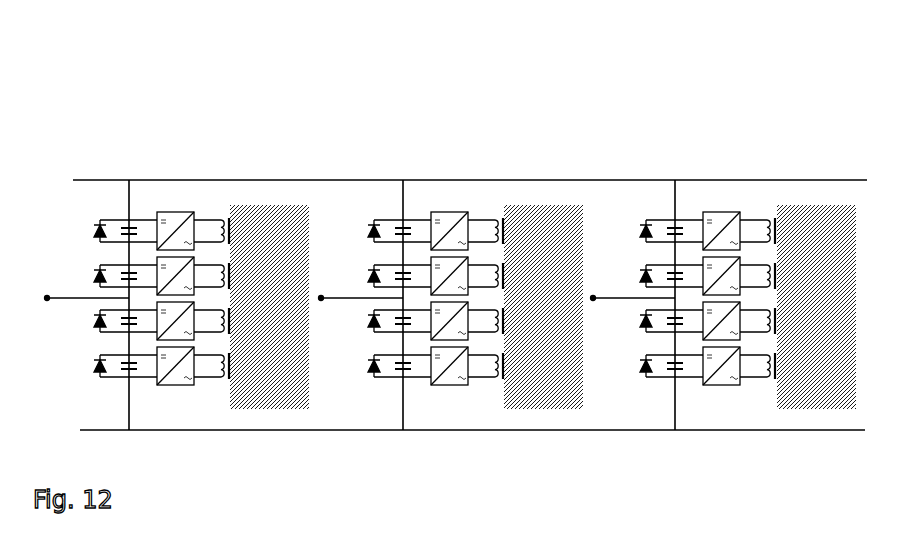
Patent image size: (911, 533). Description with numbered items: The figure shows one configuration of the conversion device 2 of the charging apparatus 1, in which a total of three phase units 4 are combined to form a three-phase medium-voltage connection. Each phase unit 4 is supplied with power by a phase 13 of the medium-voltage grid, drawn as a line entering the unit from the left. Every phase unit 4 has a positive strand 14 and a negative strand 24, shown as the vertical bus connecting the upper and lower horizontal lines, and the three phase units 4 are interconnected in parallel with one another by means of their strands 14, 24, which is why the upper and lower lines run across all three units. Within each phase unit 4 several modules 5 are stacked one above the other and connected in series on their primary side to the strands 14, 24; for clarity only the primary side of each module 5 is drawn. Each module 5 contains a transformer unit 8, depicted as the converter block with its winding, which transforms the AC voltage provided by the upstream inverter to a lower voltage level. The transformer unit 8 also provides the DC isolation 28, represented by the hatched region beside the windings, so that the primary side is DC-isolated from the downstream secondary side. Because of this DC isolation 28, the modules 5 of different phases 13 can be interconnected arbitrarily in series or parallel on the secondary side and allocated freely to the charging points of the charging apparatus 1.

The charging apparatus 1 is at (86, 47).
The conversion device 2 is at (790, 129).
The phase unit 4 is at (128, 166).
The module 5 is at (78, 222).
The transformer unit 8 is at (215, 203).
The phase 13 is at (83, 297).
The positive strand 14 is at (135, 185).
The negative strand 24 is at (132, 407).
The DC isolation 28 is at (232, 216).